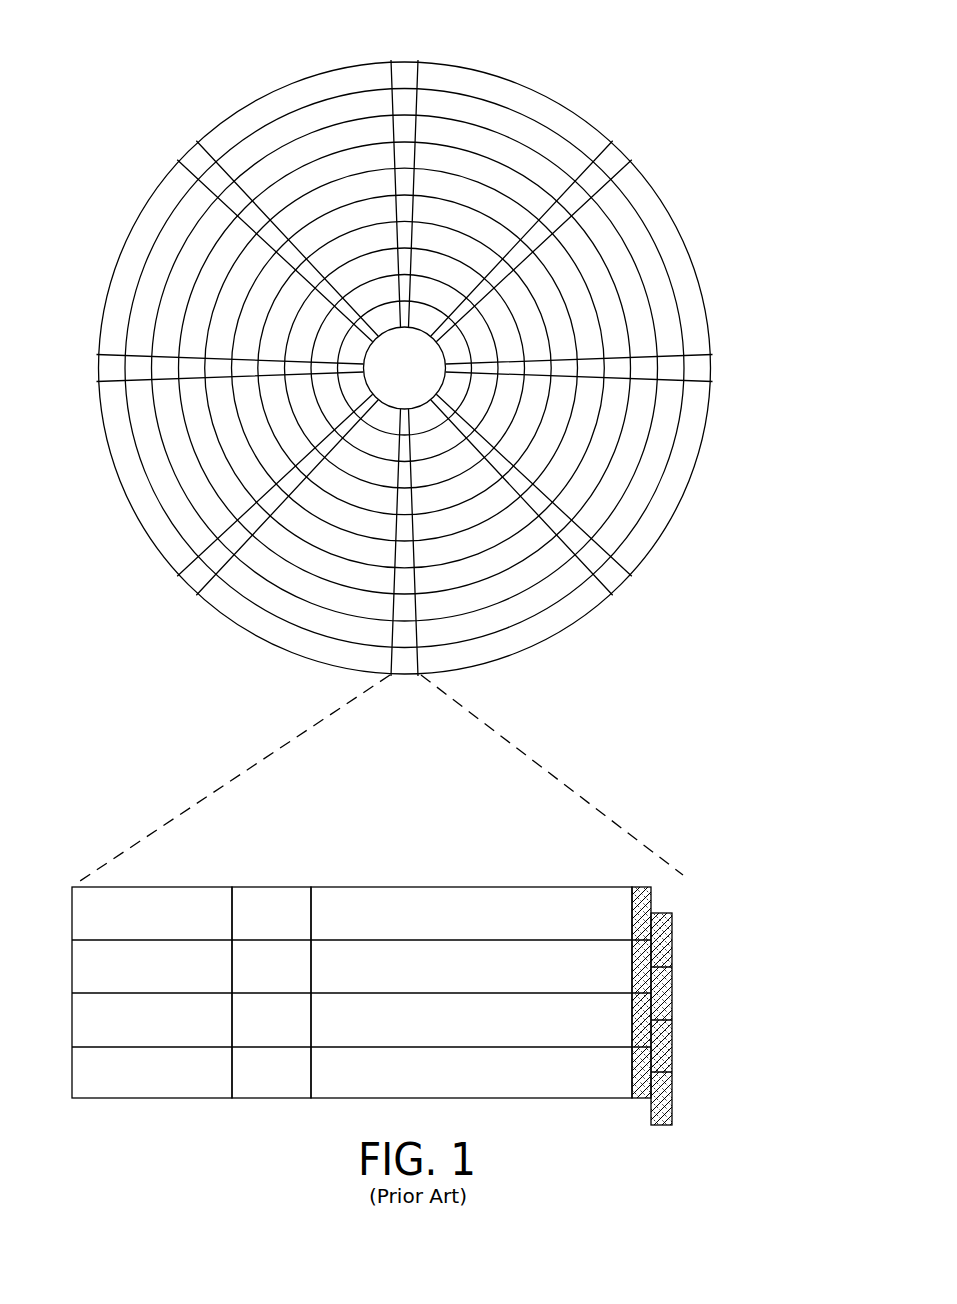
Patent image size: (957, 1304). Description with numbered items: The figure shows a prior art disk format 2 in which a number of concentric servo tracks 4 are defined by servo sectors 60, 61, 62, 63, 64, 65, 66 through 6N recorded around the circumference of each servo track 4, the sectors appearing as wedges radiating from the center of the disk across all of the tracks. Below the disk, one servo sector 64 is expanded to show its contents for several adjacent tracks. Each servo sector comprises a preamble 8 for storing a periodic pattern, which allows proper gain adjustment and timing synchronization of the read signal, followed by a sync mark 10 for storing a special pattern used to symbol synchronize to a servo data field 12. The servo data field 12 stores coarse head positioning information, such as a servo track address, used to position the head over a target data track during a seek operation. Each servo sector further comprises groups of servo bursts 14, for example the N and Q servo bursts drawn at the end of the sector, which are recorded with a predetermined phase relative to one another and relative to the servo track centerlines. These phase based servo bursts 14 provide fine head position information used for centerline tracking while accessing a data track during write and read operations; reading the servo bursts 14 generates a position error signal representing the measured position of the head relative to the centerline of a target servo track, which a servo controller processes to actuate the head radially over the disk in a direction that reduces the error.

The disk format 2 is at (401, 375).
The servo track 4 is at (510, 122).
The servo sector 60 is at (404, 70).
The servo sector 61 is at (612, 160).
The servo sector 62 is at (703, 371).
The servo sector 63 is at (615, 579).
The servo sector 64 is at (266, 740).
The servo sector 65 is at (193, 579).
The servo sector 66 is at (104, 369).
The servo sector 6N is at (252, 220).
The preamble 8 is at (159, 887).
The sync mark 10 is at (273, 887).
The servo data field 12 is at (459, 887).
The servo bursts 14 is at (675, 878).